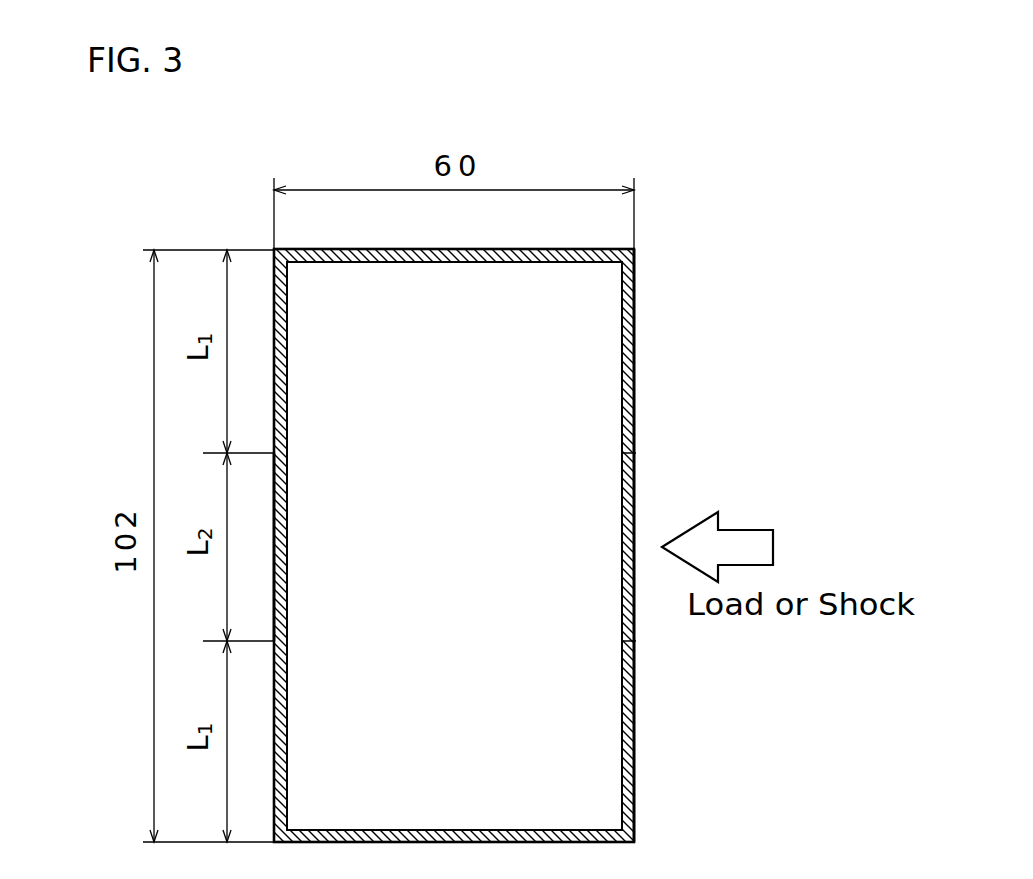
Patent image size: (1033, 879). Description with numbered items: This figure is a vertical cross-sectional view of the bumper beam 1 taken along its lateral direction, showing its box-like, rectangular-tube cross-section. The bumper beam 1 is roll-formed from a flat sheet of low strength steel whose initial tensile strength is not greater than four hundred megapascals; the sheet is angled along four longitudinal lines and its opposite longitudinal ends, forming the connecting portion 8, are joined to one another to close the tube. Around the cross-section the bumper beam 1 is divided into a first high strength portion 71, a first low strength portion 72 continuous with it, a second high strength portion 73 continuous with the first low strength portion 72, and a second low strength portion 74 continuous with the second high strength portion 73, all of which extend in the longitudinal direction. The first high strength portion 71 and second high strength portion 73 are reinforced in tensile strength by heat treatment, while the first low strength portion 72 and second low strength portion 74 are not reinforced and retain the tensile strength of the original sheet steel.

The bumper beam 1 is at (652, 245).
The first high strength portion 71 is at (634, 313).
The first low strength portion 72 is at (634, 500).
The second high strength portion 73 is at (634, 778).
The second low strength portion 74 is at (274, 500).
The connecting portion 8 is at (274, 548).